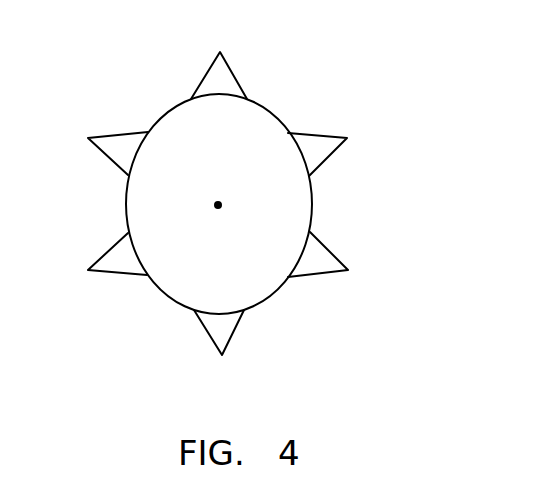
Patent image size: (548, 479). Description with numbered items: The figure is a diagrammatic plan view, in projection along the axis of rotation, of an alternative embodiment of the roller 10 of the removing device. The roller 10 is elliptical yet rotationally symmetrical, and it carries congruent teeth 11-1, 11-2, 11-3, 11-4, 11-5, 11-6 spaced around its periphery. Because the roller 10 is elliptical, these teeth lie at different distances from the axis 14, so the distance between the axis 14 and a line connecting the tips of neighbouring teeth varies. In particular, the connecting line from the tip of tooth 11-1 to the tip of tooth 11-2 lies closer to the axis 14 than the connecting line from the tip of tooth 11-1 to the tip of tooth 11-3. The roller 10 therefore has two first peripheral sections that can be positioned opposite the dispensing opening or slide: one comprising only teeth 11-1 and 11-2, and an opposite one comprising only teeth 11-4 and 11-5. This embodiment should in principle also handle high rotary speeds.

The roller 10 is at (283, 204).
The tooth 11-1 is at (332, 120).
The tooth 11-2 is at (332, 289).
The tooth 11-3 is at (295, 362).
The tooth 11-4 is at (101, 289).
The tooth 11-5 is at (104, 119).
The tooth 11-6 is at (294, 49).
The axis 14 is at (123, 209).